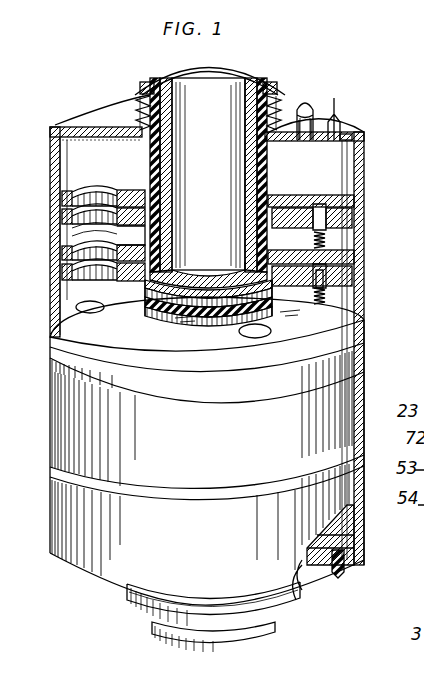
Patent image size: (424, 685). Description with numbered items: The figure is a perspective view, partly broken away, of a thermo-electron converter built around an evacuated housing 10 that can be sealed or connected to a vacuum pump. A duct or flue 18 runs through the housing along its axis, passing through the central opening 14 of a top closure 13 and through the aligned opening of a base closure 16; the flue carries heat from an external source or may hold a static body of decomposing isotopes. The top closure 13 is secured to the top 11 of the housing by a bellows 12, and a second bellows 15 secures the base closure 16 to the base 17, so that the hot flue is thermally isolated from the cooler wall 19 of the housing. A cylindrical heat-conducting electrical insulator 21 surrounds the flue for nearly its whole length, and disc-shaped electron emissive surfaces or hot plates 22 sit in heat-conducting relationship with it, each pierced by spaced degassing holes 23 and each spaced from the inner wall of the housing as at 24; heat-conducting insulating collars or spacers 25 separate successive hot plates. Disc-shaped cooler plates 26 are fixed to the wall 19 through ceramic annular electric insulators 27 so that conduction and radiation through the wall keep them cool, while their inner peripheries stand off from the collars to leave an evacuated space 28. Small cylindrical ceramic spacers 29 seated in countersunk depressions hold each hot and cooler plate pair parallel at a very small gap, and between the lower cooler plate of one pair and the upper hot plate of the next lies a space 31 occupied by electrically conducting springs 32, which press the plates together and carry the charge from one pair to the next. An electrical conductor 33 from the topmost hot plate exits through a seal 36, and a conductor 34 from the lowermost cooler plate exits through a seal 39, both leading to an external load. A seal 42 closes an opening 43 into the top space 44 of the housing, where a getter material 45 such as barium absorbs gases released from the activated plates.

The housing 10 is at (375, 394).
The top 11 is at (342, 127).
The bellows 12 is at (136, 108).
The top closure 13 is at (146, 84).
The central opening 14 is at (270, 84).
The bellows 15 is at (128, 598).
The base closure 16 is at (155, 628).
The base 17 is at (305, 598).
The duct or flue 18 is at (222, 127).
The wall 19 is at (352, 325).
The cylindrical heat-conducting electrical insulator 21 is at (255, 237).
The electron emissive surfaces (hot plates) 22 is at (90, 240).
The degassing holes 23 is at (70, 234).
The space 24 is at (90, 258).
The spacers (collars) 25 is at (131, 238).
The cooler plates 26 is at (336, 228).
The annular electric insulators 27 is at (80, 280).
The evacuated space 28 is at (165, 205).
The ceramic spacers 29 is at (318, 228).
The space 31 is at (85, 187).
The electrically conducting springs 32 is at (322, 300).
The electrical conductor 33 is at (357, 161).
The electrical conductor 34 is at (340, 580).
The seal 36 is at (364, 135).
The seal 39 is at (346, 572).
The seal 42 is at (330, 103).
The opening 43 is at (303, 140).
The top space 44 is at (75, 150).
The getter material 45 is at (75, 128).